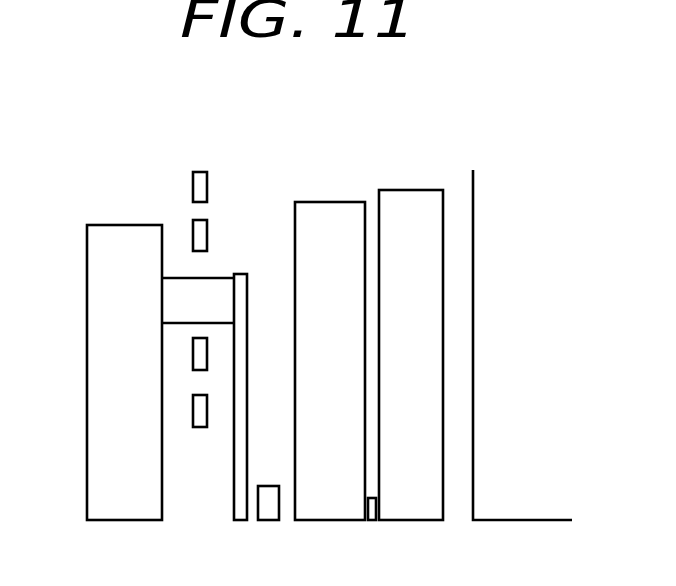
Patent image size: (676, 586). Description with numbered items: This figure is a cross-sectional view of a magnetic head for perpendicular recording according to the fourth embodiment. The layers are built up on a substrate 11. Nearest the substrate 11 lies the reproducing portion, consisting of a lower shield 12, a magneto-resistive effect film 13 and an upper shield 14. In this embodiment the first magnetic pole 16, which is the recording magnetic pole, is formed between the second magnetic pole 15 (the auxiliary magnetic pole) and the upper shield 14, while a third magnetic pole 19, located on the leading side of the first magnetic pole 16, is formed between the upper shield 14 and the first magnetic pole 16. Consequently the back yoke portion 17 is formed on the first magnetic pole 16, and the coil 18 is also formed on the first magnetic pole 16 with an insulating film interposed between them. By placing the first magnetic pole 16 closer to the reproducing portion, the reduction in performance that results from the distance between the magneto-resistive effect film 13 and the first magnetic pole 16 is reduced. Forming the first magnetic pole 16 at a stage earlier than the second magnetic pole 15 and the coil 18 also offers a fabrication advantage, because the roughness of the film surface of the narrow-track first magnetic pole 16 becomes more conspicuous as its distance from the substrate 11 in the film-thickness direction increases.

The substrate 11 is at (505, 455).
The lower shield 12 is at (415, 513).
The magneto-resistive effect film 13 is at (372, 518).
The upper shield 14 is at (328, 513).
The second magnetic pole 15 is at (98, 343).
The first magnetic pole 16 is at (237, 275).
The back yoke portion 17 is at (192, 287).
The coil 18 is at (205, 182).
The third magnetic pole 19 is at (270, 513).